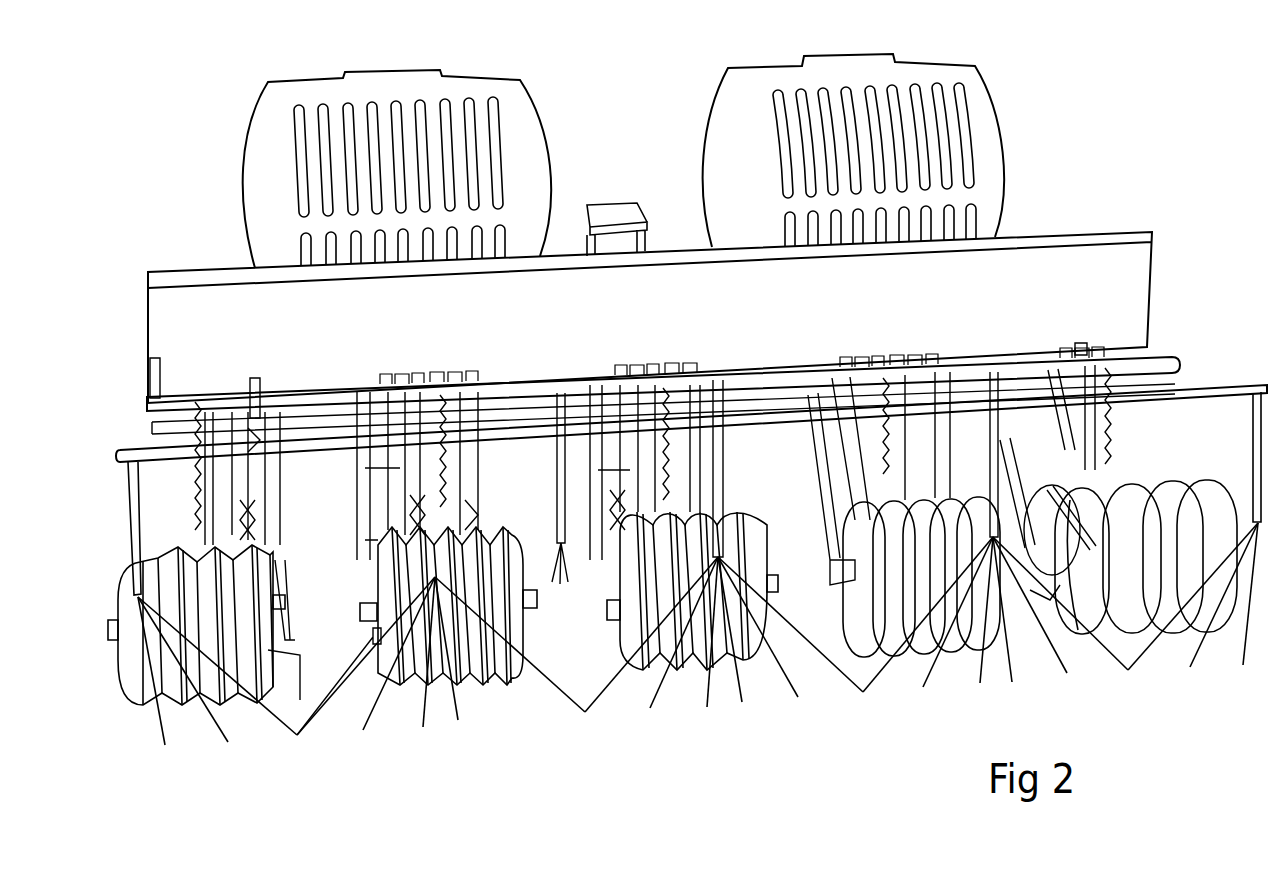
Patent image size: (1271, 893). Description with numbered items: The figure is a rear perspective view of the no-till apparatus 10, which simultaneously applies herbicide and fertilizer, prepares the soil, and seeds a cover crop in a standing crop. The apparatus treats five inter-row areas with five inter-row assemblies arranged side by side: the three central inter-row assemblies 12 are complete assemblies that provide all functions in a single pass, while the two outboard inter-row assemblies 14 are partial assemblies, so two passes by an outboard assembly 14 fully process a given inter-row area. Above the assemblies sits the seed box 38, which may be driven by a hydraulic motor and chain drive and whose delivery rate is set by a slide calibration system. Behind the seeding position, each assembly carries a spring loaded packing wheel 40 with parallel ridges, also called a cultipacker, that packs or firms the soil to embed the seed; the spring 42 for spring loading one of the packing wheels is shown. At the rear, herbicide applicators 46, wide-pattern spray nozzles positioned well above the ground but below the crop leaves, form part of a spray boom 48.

The no-till apparatus 10 is at (1068, 97).
The central inter-row assemblies 12 is at (463, 749).
The outboard inter-row assemblies 14 is at (197, 764).
The seed box 38 is at (1033, 300).
The packing wheel 40 is at (380, 670).
The spring 42 is at (1118, 423).
The herbicide applicator 46 is at (1250, 463).
The spray boom 48 is at (153, 448).